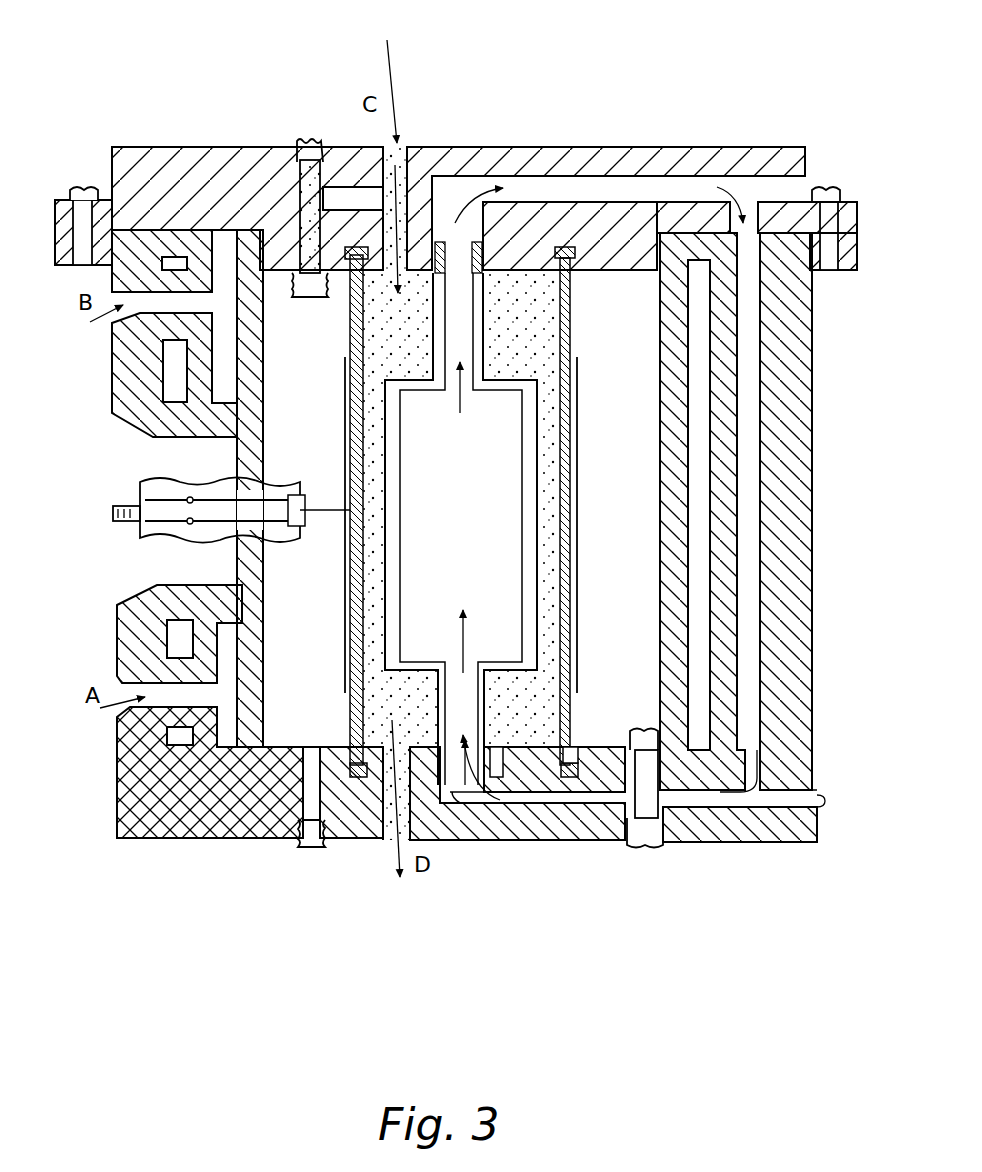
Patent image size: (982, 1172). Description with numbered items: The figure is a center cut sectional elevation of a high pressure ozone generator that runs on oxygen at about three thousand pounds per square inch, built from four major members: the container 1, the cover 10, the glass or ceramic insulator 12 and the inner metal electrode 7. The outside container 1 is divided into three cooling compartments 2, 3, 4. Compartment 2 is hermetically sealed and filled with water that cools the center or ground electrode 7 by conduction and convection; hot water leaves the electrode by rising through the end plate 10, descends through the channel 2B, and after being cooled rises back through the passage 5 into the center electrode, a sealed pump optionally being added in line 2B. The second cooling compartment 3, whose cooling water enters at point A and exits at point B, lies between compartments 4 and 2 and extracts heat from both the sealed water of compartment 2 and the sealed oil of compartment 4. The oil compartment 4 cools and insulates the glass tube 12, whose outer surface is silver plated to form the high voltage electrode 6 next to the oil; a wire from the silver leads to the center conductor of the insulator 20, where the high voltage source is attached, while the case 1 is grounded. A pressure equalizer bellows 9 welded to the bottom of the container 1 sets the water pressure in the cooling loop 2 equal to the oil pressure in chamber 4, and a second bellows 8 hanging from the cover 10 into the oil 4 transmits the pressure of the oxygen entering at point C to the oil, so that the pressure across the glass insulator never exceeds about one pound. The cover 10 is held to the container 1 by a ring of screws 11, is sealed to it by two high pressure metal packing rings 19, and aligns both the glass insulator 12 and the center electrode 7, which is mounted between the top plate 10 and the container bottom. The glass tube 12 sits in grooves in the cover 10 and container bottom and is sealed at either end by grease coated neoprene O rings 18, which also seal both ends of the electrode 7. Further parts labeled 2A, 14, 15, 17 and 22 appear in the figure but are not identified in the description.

The container 1 is at (790, 638).
The cooling compartment 2 is at (750, 437).
The passage 2A is at (517, 188).
The channel 2B is at (760, 527).
The second cooling compartment 3 is at (703, 590).
The inner oil compartment 4 is at (635, 655).
The return passage 5 is at (462, 755).
The high voltage electrode 6 is at (350, 438).
The inner metal electrode 7 is at (400, 417).
The pressure equalizer bellows 8 is at (335, 262).
The pressure equalizer bellows 9 is at (765, 842).
The cover 10 is at (617, 237).
The screws 11 is at (78, 186).
The glass insulator 12 is at (565, 333).
The bolt 14 is at (650, 848).
The fitting 15 is at (302, 843).
The tube fitting 17 is at (312, 150).
The O ring 18 is at (557, 247).
The metal rings of packing 19 is at (352, 348).
The insulator 20 is at (160, 528).
The lead wire 22 is at (350, 497).